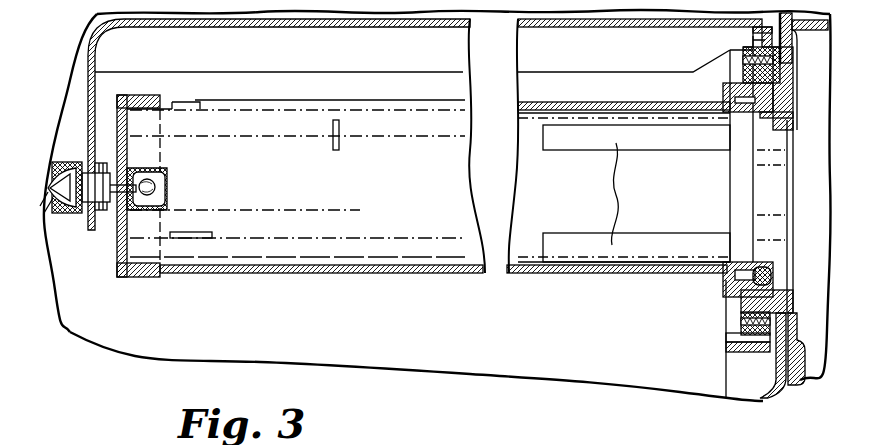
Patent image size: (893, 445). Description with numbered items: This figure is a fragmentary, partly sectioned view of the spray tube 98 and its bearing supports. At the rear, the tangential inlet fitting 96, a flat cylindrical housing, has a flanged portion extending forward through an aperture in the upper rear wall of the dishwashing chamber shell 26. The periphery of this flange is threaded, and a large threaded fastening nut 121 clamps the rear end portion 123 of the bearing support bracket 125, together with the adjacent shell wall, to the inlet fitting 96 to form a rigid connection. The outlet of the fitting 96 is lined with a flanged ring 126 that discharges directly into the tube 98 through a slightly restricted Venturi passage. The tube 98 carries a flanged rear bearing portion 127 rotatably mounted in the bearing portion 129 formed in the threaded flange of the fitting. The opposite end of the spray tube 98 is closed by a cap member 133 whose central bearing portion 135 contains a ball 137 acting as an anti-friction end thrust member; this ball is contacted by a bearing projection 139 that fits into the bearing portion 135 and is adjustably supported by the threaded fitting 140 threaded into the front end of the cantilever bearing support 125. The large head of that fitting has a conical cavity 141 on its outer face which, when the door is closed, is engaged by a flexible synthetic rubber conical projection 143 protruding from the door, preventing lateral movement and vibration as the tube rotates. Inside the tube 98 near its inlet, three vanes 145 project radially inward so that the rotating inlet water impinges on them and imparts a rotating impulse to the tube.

The dishwashing chamber shell 26 is at (770, 388).
The tangential inlet fitting 96 is at (803, 368).
The spray tube 98 is at (557, 274).
The threaded fastening nut 121 is at (743, 320).
The rear end portion of bearing support bracket 123 is at (743, 352).
The bearing support bracket 125 is at (525, 73).
The flanged ring 126 is at (762, 163).
The flanged rear bearing portion 127 is at (722, 274).
The bearing portion 129 is at (740, 297).
The cap member 133 is at (147, 283).
The central bearing portion 135 is at (158, 187).
The ball 137 is at (164, 207).
The bearing projection 139 is at (147, 167).
The threaded fitting 140 is at (107, 220).
The conical cavity 141 is at (50, 208).
The flexible conical projection 143 is at (52, 165).
The vanes 145 is at (620, 190).